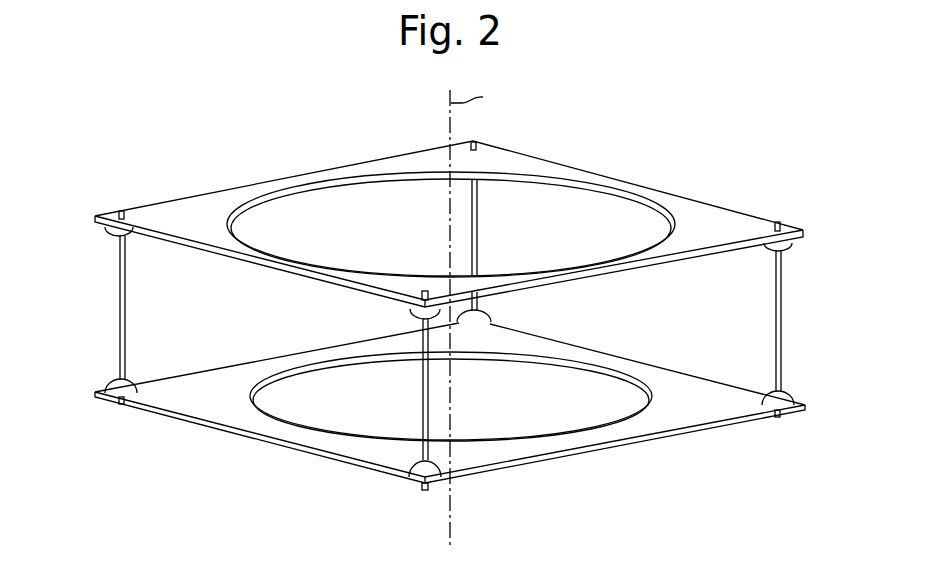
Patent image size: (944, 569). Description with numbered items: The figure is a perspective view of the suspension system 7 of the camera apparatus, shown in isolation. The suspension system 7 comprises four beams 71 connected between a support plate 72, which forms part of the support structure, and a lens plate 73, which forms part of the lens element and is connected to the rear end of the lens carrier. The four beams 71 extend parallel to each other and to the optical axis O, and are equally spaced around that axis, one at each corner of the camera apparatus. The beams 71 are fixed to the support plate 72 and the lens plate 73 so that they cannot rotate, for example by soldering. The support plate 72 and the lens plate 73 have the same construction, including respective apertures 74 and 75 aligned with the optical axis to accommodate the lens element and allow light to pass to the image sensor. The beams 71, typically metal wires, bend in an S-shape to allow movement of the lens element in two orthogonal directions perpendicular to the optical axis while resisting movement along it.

The suspension system 7 is at (270, 171).
The beams 71 is at (478, 228).
The support plate 72 is at (702, 217).
The lens plate 73 is at (710, 417).
The aperture 74 is at (612, 186).
The aperture 75 is at (613, 427).